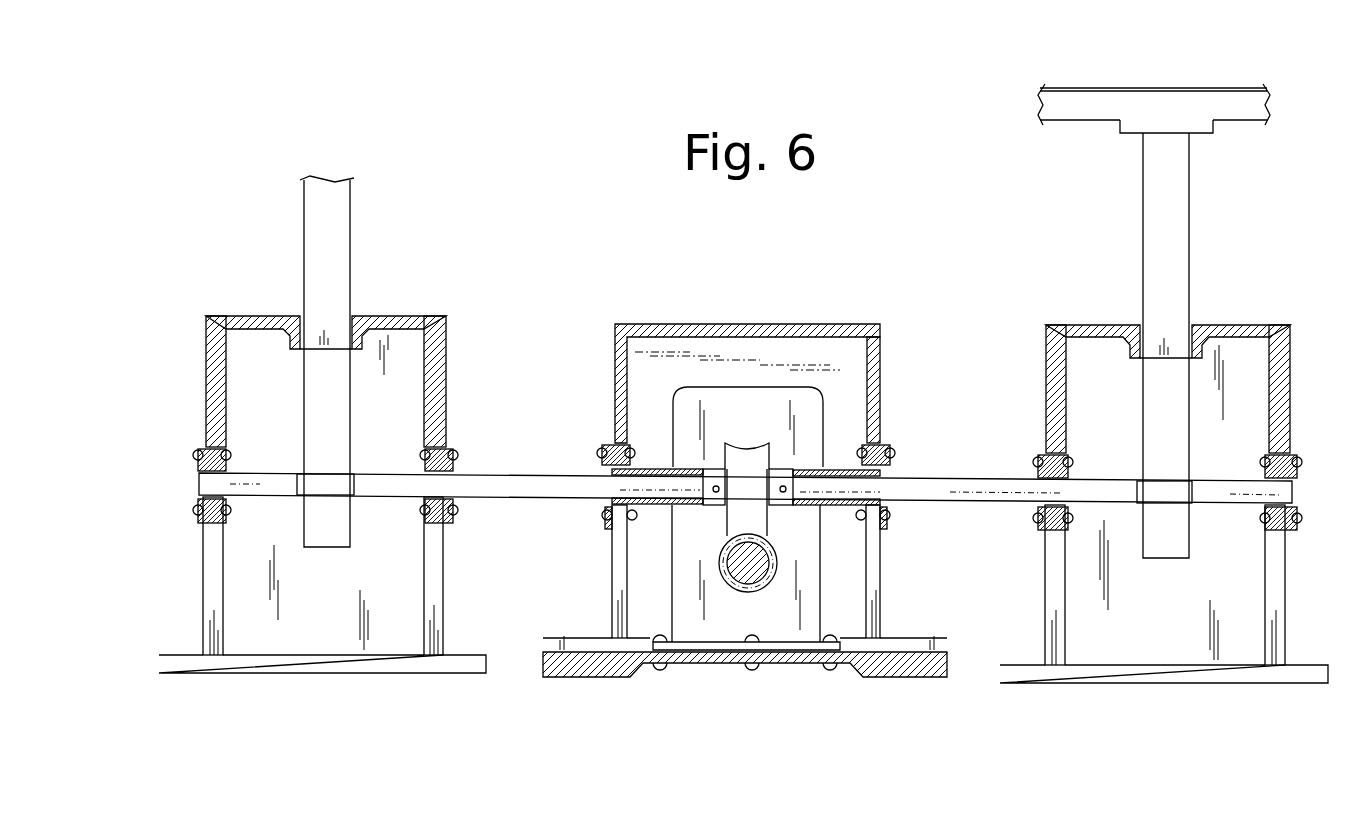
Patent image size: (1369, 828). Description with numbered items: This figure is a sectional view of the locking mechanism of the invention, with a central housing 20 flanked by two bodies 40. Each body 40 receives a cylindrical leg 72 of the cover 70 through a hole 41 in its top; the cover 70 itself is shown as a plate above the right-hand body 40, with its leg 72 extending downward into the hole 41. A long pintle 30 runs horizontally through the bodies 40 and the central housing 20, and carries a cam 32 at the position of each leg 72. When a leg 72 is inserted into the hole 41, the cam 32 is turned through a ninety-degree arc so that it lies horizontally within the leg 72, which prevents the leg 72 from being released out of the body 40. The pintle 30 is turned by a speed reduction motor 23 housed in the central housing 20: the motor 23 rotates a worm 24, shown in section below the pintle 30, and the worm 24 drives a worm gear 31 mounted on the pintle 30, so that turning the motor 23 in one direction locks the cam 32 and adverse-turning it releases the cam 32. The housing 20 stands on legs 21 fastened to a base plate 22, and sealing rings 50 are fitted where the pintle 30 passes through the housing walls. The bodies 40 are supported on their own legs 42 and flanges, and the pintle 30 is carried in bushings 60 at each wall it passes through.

The housing 20 is at (680, 320).
The housing leg 21 is at (618, 610).
The base plate 22 is at (890, 674).
The speed reduction motor 23 is at (745, 405).
The worm 24 is at (732, 590).
The pintle 30 is at (570, 477).
The worm gear 31 is at (752, 455).
The cam 32 is at (293, 486).
The body 40 is at (422, 317).
The hole 41 is at (345, 343).
The housing leg with flange 42 is at (213, 598).
The seal ring 50 is at (604, 531).
The bushing 60 is at (196, 524).
The cover 70 is at (1078, 85).
The leg 72 is at (300, 237).